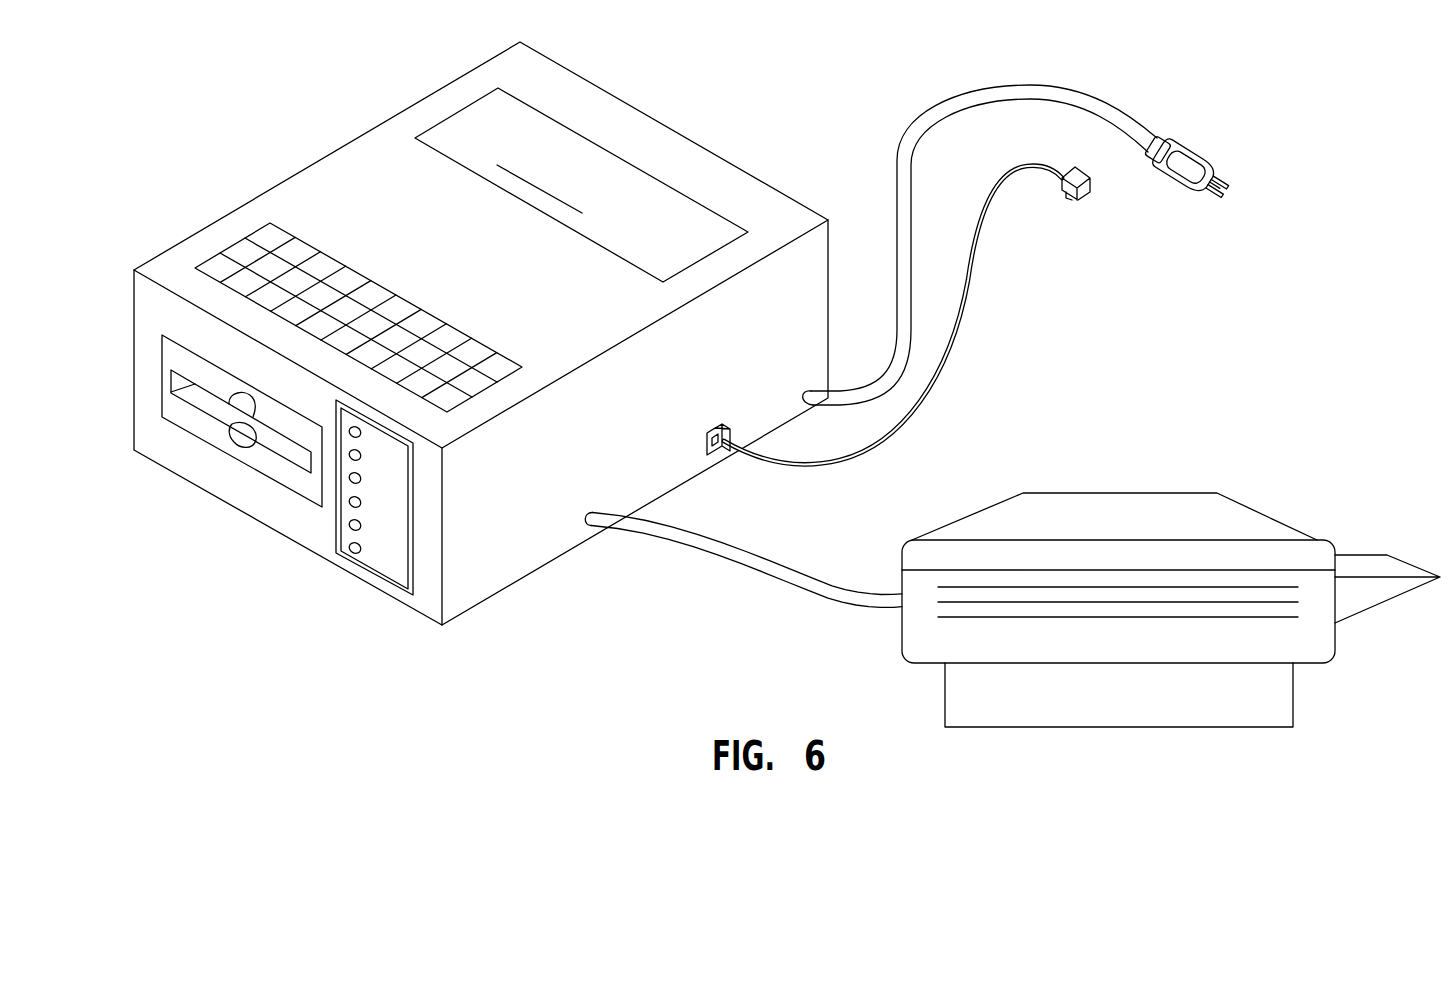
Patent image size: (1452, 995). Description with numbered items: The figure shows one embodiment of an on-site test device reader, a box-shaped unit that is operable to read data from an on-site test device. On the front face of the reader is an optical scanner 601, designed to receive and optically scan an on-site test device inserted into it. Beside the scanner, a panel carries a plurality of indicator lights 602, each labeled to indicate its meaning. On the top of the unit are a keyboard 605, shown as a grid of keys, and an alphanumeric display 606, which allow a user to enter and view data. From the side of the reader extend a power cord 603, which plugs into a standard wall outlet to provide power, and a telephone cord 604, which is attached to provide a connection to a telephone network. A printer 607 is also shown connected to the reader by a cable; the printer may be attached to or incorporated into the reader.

The optical scanner 601 is at (188, 422).
The indicator lights 602 is at (398, 570).
The power cord 603 is at (948, 112).
The telephone cord 604 is at (986, 206).
The keyboard 605 is at (244, 251).
The alphanumeric display 606 is at (665, 213).
The printer 607 is at (1272, 513).